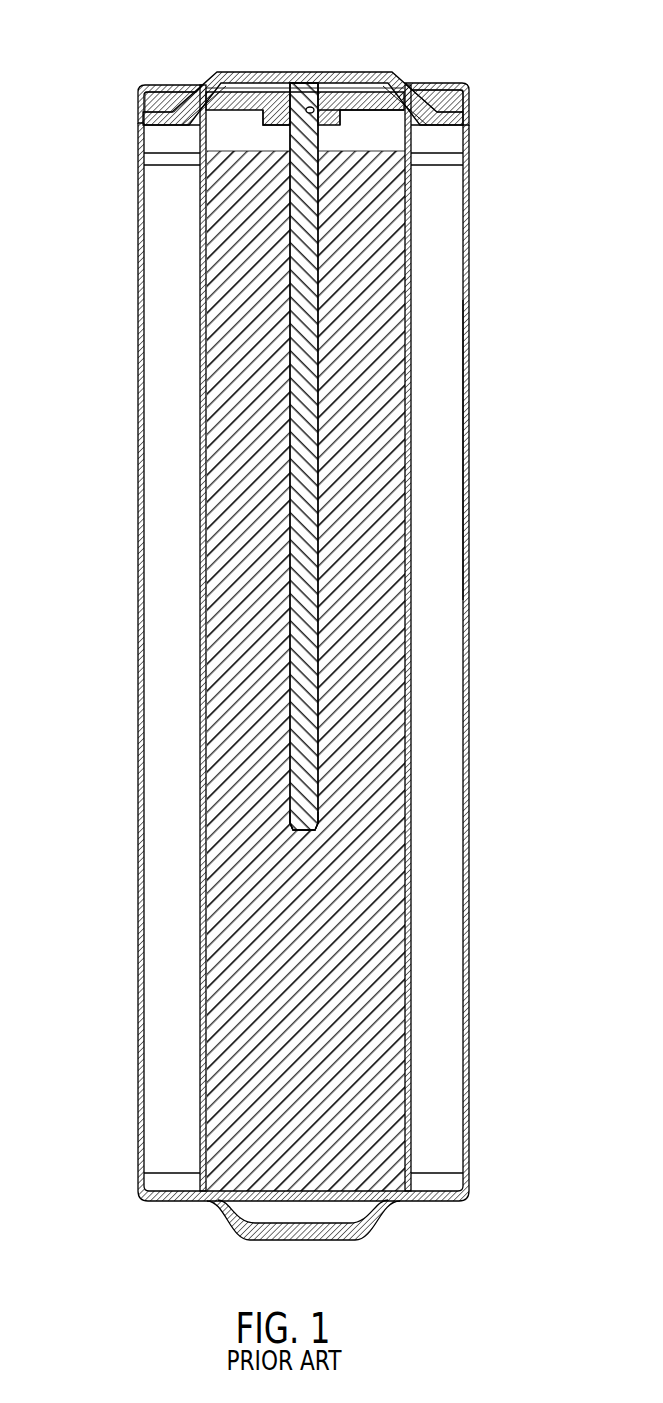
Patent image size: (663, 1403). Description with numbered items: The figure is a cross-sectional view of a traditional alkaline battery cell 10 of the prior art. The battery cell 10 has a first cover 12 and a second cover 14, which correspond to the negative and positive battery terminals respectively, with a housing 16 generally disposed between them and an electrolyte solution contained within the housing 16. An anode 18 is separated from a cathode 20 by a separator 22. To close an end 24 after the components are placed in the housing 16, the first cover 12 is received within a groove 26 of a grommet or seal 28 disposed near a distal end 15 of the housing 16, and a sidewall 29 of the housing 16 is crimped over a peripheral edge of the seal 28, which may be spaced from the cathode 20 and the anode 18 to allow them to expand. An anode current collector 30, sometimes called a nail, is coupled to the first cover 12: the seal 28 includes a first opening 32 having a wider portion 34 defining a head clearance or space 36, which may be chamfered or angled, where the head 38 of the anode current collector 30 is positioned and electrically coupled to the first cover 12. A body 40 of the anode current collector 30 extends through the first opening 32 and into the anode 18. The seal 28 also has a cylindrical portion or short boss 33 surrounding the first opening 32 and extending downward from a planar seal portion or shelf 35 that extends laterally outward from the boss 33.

The battery cell 10 is at (85, 118).
The first cover 12 is at (337, 78).
The second cover 14 is at (336, 1243).
The distal end 15 is at (485, 68).
The housing 16 is at (468, 1140).
The anode 18 is at (392, 862).
The cathode 20 is at (450, 1035).
The separator 22 is at (196, 453).
The end 24 is at (470, 104).
The groove 26 is at (170, 127).
The grommet or seal 28 is at (278, 113).
The sidewall 29 is at (466, 455).
The anode current collector 30 is at (307, 818).
The first opening 32 is at (335, 110).
The cylindrical portion or boss 33 is at (345, 122).
The wider portion 34 is at (278, 92).
The planar seal portion or shelf 35 is at (237, 80).
The head clearance or space 36 is at (381, 88).
The head 38 is at (298, 82).
The body 40 is at (300, 595).